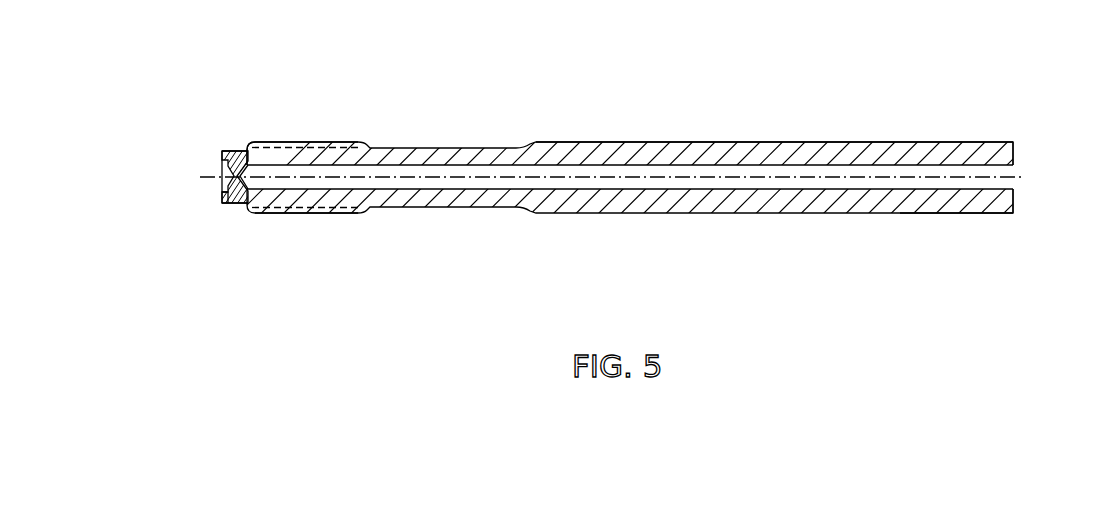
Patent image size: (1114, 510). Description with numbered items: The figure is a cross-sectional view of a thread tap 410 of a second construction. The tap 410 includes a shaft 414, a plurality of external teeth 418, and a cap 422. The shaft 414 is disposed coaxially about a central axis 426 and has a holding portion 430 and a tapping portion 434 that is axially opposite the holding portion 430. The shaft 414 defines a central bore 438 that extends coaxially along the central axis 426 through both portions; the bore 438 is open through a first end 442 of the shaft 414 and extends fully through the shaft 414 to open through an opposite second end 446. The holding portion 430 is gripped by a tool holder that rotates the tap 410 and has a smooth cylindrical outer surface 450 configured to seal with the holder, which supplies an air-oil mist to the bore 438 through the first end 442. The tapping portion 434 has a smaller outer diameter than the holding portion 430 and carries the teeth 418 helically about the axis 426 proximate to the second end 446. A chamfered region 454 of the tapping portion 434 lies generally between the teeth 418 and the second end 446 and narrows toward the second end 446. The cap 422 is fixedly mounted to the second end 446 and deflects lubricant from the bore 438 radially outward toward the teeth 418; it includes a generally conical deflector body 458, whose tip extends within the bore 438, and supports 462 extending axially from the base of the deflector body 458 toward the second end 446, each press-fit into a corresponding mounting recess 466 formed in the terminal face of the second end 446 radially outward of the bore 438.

The thread tap 410 is at (713, 67).
The shaft 414 is at (472, 202).
The external teeth 418 is at (350, 142).
The cap 422 is at (208, 154).
The central axis 426 is at (1030, 179).
The holding portion 430 is at (786, 145).
The tapping portion 434 is at (322, 213).
The bore 438 is at (639, 188).
The first end 442 is at (1017, 147).
The second end 446 is at (240, 203).
The outer surface 450 is at (925, 142).
The chamfered region 454 is at (247, 148).
The deflector body 458 is at (222, 191).
The supports 462 is at (235, 152).
The mounting recesses 466 is at (250, 152).